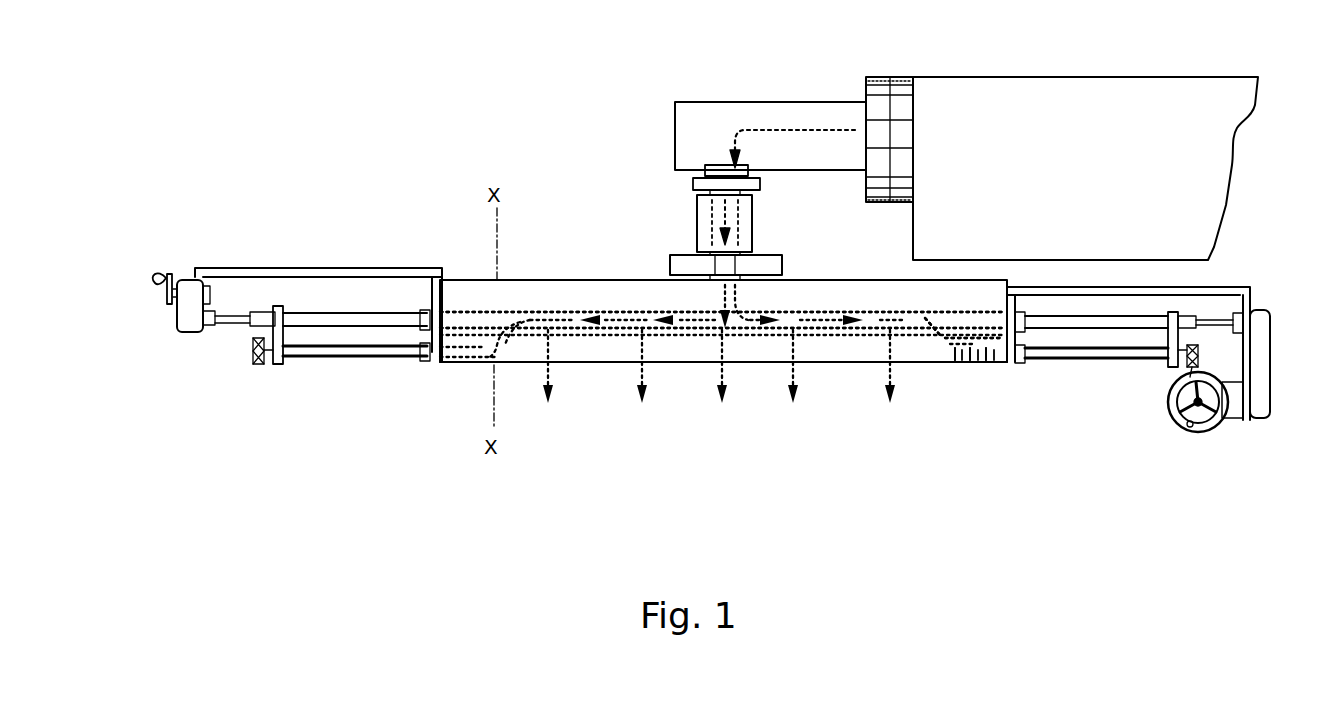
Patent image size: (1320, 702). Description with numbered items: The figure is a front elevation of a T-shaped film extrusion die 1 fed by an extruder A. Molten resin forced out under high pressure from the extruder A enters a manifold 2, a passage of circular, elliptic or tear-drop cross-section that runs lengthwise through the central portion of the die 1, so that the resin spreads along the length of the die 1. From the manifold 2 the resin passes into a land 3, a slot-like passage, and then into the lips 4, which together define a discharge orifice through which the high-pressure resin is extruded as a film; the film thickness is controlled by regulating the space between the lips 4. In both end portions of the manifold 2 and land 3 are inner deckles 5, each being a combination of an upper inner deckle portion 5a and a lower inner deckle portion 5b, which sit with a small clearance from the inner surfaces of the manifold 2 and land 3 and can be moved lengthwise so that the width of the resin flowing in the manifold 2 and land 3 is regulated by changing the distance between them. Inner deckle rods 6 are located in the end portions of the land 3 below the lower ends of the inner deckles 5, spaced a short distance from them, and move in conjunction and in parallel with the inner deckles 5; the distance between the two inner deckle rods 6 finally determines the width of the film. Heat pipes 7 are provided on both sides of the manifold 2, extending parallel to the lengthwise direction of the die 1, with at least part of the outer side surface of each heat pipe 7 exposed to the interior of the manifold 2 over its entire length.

The T-shaped film extrusion die 1 is at (465, 278).
The manifold 2 is at (785, 325).
The land 3 is at (845, 342).
The lips 4 is at (877, 357).
The inner deckle 5 is at (890, 455).
The upper inner deckle portion 5a is at (942, 322).
The lower inner deckle portion 5b is at (957, 342).
The inner deckle rods 6 is at (992, 342).
The heat pipes 7 is at (999, 367).
The extruder A is at (953, 77).